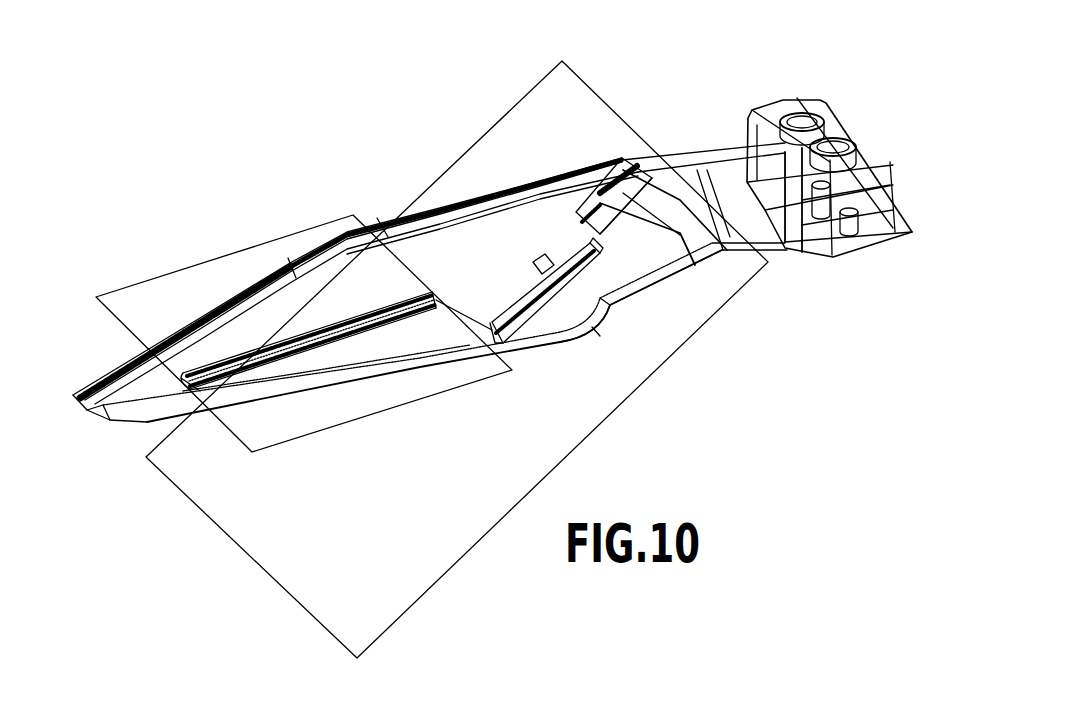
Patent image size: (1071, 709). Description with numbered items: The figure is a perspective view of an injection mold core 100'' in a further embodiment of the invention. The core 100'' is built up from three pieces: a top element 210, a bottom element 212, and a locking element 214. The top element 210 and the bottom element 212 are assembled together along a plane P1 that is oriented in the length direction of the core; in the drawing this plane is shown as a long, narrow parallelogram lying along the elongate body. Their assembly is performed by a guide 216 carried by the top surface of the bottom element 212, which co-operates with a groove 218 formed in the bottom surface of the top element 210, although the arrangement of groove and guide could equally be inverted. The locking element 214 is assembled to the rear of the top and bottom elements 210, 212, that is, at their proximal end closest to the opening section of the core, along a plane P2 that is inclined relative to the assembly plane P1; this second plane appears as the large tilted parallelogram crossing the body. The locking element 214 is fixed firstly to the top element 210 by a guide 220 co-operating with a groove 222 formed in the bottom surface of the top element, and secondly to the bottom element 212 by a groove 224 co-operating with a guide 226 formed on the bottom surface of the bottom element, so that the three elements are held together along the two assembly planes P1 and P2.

The core 100'' is at (781, 132).
The top element 210 is at (290, 263).
The bottom element 212 is at (455, 362).
The locking element 214 is at (585, 287).
The guide 216 is at (283, 350).
The groove 218 is at (182, 382).
The guide 220 is at (570, 192).
The groove 222 is at (617, 162).
The groove 224 is at (523, 323).
The guide 226 is at (533, 290).
The plane P1 is at (117, 298).
The plane P2 is at (348, 612).